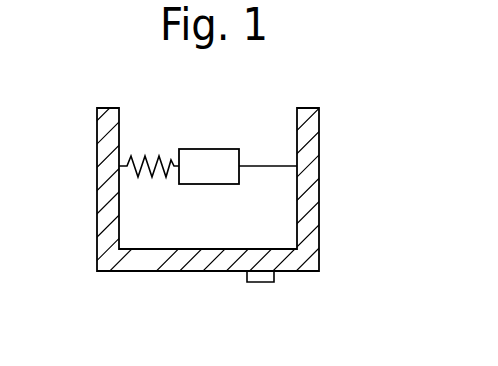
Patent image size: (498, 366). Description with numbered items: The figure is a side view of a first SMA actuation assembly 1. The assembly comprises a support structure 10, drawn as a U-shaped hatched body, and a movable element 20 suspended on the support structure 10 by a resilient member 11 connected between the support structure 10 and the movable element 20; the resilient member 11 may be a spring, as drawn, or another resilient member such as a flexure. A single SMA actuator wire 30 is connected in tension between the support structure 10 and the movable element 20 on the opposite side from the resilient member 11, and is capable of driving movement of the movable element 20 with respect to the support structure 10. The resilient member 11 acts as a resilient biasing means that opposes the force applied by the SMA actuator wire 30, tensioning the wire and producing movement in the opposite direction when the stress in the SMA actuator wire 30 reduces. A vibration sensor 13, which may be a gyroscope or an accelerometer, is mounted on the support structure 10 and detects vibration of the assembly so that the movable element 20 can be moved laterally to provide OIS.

The first SMA actuation assembly 1 is at (107, 79).
The support structure 10 is at (119, 272).
The resilient member 11 is at (158, 177).
The vibration sensor 13 is at (260, 283).
The movable element 20 is at (211, 160).
The SMA actuator wire 30 is at (272, 168).